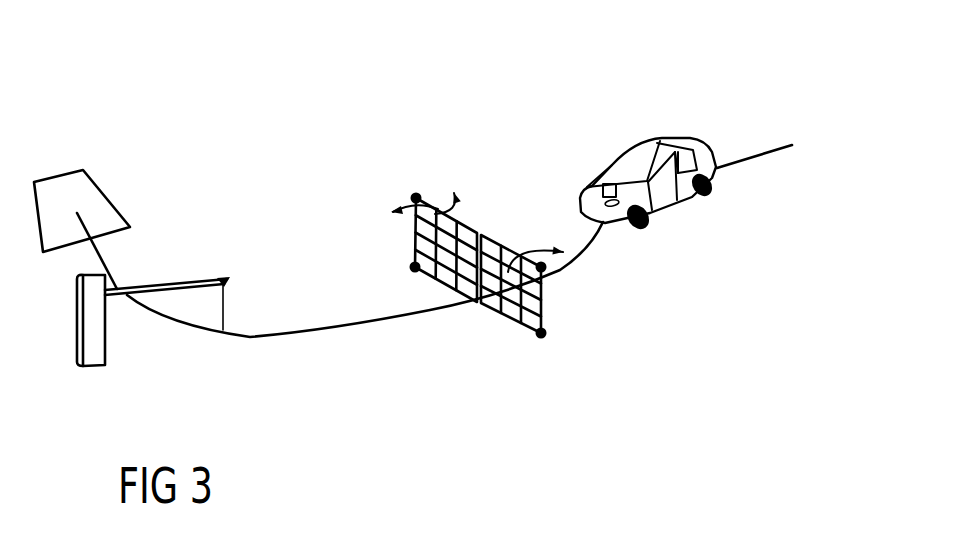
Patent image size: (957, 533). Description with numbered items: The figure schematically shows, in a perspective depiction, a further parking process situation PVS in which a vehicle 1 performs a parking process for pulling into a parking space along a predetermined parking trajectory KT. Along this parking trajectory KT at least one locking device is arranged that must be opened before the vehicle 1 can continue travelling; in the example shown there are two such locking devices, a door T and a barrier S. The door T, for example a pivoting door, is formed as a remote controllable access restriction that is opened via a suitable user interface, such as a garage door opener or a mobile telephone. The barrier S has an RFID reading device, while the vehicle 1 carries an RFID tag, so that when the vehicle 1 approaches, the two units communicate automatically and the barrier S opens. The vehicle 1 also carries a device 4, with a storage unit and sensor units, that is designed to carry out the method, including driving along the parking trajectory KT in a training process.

The parking process situation PVS is at (489, 109).
The barrier S is at (170, 282).
The door T is at (463, 227).
The parking trajectory KT is at (740, 163).
The vehicle 1 is at (663, 140).
The device 4 is at (610, 183).